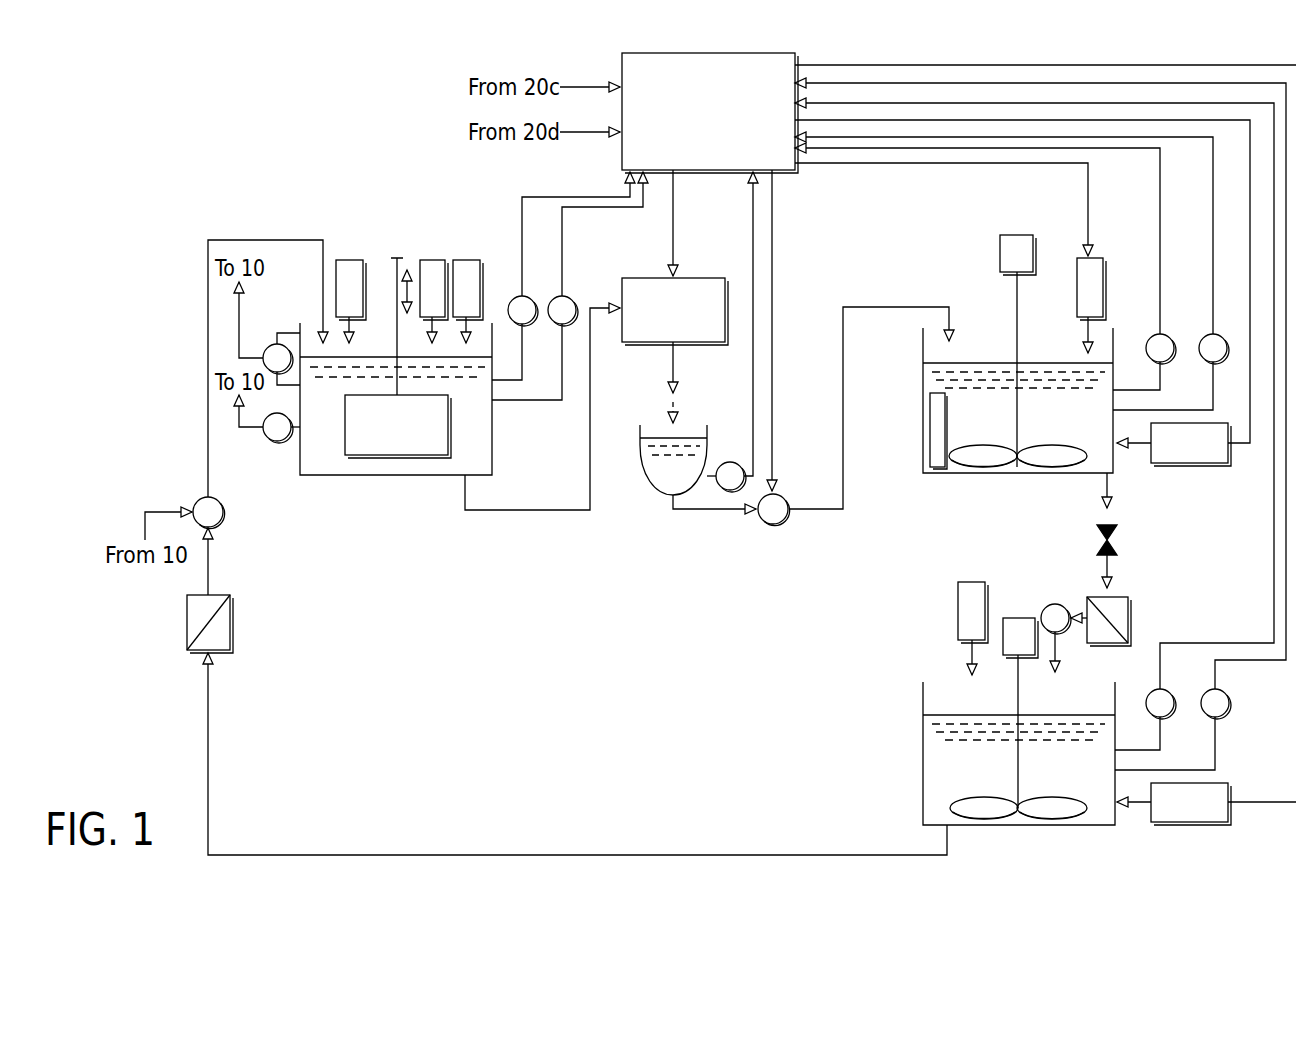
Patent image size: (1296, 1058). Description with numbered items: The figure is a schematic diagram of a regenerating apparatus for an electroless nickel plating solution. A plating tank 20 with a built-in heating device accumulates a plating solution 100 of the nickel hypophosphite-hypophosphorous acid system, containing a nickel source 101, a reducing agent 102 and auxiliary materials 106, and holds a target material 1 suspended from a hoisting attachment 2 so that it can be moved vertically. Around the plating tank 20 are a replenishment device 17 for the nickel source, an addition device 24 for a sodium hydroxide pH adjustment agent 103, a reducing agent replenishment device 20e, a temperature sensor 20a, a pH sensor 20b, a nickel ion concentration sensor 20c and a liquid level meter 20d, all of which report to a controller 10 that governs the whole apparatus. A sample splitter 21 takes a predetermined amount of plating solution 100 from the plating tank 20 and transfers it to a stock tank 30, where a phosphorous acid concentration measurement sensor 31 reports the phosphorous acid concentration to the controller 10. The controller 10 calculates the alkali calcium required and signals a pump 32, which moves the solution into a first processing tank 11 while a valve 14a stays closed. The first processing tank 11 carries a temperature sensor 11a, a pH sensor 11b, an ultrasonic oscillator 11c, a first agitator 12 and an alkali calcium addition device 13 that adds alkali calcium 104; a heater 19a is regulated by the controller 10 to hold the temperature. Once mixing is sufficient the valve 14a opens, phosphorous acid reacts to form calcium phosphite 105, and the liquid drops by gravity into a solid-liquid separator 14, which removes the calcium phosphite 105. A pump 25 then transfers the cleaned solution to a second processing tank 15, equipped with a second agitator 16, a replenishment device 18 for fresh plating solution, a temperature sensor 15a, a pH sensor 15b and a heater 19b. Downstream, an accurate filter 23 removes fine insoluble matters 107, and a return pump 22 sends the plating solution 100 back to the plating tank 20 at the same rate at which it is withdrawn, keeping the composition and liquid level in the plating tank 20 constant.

The target material 1 is at (448, 428).
The hoisting attachment 2 is at (397, 262).
The controller 10 is at (728, 170).
The first processing tank 11 is at (938, 473).
The temperature sensor 11a is at (1150, 338).
The pH sensor 11b is at (1203, 338).
The ultrasonic oscillator 11c is at (930, 432).
The first agitator 12 is at (1017, 290).
The alkali calcium addition device 13 is at (1103, 258).
The solid-liquid separator 14 is at (1128, 600).
The valve 14a is at (1112, 535).
The second processing tank 15 is at (1088, 825).
The temperature sensor 15a is at (1170, 713).
The pH sensor 15b is at (1225, 713).
The second agitator 16 is at (1018, 702).
The replenishment device 17 is at (349, 259).
The replenishment device 18 is at (972, 582).
The heater 19a is at (1220, 463).
The heater 19b is at (1205, 822).
The plating tank 20 is at (338, 475).
The temperature sensor 20a is at (512, 299).
The pH sensor 20b is at (572, 299).
The nickel ion concentration sensor 20c is at (277, 441).
The liquid level meter 20d is at (268, 346).
The reducing agent replenishment device 20e is at (432, 259).
The sample splitter 21 is at (700, 277).
The return pump 22 is at (197, 500).
The accurate filter 23 is at (230, 600).
The addition device 24 is at (466, 259).
The pump 25 is at (1045, 608).
The stock tank 30 is at (640, 432).
The phosphorous acid concentration measurement sensor 31 is at (730, 462).
The pump 32 is at (773, 525).
The plating solution 100 is at (424, 475).
The nickel source 101 is at (352, 333).
The reducing agent 102 is at (975, 662).
The pH adjustment agent 103 is at (472, 318).
The alkali calcium 104 is at (1088, 322).
The calcium phosphite 105 is at (1128, 618).
The auxiliary materials 106 is at (937, 675).
The fine insoluble matters 107 is at (230, 622).